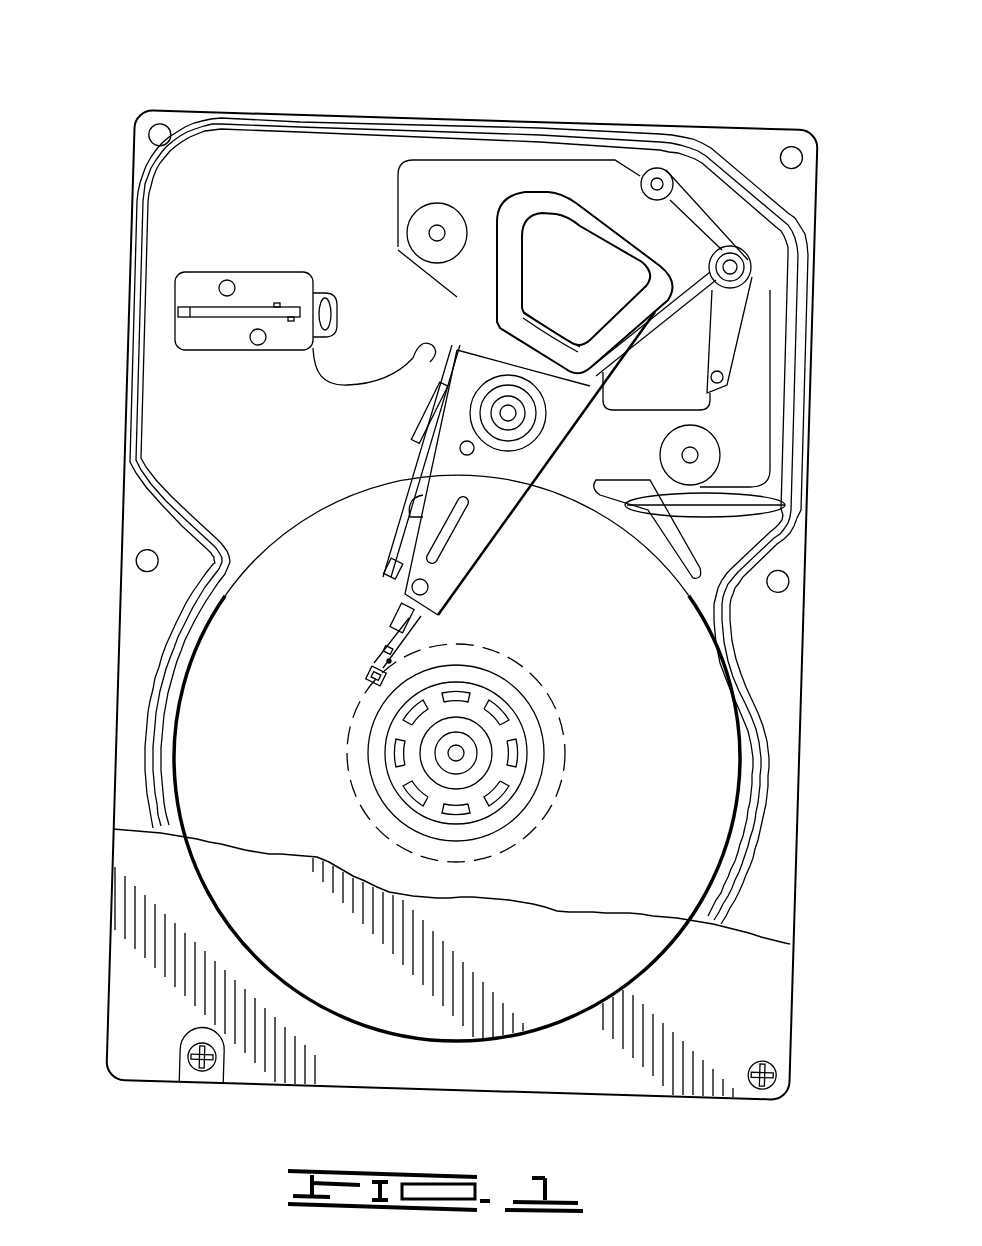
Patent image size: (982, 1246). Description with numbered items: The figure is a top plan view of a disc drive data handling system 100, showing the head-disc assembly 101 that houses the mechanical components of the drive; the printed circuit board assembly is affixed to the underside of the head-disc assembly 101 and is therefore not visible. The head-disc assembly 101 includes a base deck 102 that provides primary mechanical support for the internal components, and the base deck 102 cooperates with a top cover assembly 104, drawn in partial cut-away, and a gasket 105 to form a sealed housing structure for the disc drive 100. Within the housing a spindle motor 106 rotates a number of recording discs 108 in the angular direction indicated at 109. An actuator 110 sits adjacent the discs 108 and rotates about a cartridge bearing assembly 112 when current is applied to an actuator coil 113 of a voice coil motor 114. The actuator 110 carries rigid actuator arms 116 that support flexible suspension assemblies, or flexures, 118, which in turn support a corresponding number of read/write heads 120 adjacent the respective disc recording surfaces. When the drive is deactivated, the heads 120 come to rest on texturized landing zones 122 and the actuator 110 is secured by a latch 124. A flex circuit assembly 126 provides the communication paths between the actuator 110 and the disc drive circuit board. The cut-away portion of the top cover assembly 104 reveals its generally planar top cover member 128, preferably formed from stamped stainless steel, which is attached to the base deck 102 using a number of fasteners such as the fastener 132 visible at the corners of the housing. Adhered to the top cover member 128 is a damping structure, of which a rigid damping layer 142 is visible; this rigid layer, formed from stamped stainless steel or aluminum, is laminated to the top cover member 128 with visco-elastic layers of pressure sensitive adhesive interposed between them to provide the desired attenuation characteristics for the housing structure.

The disc drive data handling system 100 is at (235, 75).
The head-disc assembly 101 is at (212, 212).
The base deck 102 is at (176, 422).
The top cover assembly 104 is at (158, 866).
The gasket 105 is at (137, 283).
The spindle motor 106 is at (489, 745).
The recording discs 108 is at (715, 772).
The angular direction 109 is at (210, 768).
The actuator 110 is at (470, 488).
The cartridge bearing assembly 112 is at (510, 420).
The actuator coil 113 is at (640, 303).
The voice coil motor 114 is at (542, 200).
The rigid actuator arms 116 is at (465, 537).
The flexible suspension assemblies 118 is at (388, 632).
The read/write heads 120 is at (372, 668).
The texturized landing zones 122 is at (548, 672).
The latch 124 is at (730, 317).
The flex circuit assembly 126 is at (357, 380).
The top cover member 128 is at (752, 1000).
The fastener 132 is at (200, 1068).
The rigid damping layer 142 is at (522, 920).